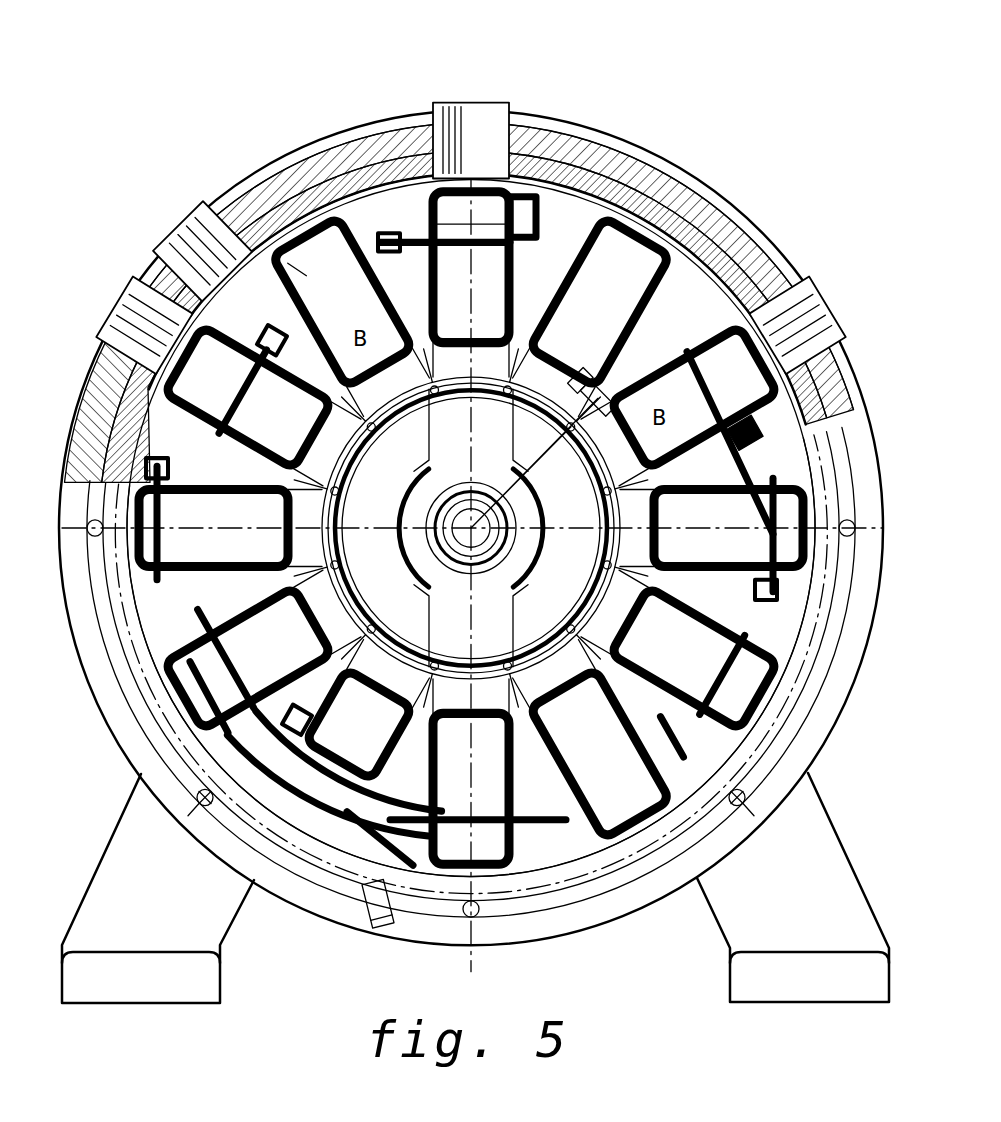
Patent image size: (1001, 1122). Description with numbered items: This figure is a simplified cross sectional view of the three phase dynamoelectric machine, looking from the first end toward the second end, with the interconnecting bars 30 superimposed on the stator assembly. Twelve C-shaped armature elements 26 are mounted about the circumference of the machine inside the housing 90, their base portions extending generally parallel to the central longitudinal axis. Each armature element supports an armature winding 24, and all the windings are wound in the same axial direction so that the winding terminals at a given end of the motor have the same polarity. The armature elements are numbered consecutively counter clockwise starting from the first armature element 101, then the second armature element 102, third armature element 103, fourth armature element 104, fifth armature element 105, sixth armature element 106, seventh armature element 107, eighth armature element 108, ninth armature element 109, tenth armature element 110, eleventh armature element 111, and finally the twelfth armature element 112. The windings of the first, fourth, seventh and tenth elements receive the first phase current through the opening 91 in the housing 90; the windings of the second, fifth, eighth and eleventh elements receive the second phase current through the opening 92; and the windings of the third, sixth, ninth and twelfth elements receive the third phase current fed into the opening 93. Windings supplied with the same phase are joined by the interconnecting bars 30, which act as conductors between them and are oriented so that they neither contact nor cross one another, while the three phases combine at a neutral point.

The armature windings 24 is at (735, 625).
The C-shaped armature elements 26 is at (765, 725).
The interconnecting bars 30 is at (166, 645).
The housing 90 is at (338, 130).
The opening 91 is at (486, 122).
The opening 92 is at (840, 327).
The opening 93 is at (108, 313).
The first armature element 101 is at (443, 230).
The second armature element 102 is at (302, 181).
The third armature element 103 is at (243, 390).
The fourth armature element 104 is at (232, 524).
The fifth armature element 105 is at (281, 679).
The sixth armature element 106 is at (386, 752).
The seventh armature element 107 is at (495, 854).
The eighth armature element 108 is at (646, 797).
The ninth armature element 109 is at (727, 673).
The tenth armature element 110 is at (762, 550).
The eleventh armature element 111 is at (843, 328).
The twelfth armature element 112 is at (640, 232).